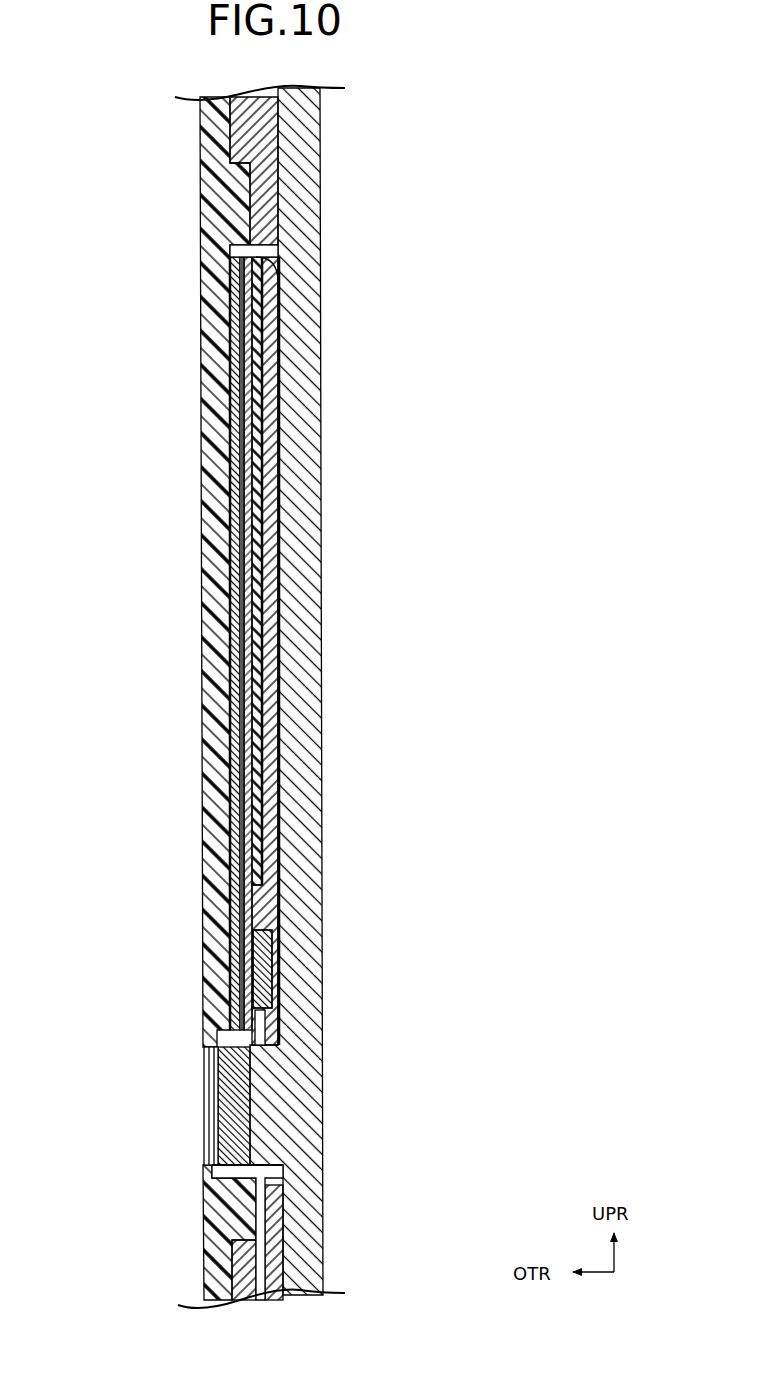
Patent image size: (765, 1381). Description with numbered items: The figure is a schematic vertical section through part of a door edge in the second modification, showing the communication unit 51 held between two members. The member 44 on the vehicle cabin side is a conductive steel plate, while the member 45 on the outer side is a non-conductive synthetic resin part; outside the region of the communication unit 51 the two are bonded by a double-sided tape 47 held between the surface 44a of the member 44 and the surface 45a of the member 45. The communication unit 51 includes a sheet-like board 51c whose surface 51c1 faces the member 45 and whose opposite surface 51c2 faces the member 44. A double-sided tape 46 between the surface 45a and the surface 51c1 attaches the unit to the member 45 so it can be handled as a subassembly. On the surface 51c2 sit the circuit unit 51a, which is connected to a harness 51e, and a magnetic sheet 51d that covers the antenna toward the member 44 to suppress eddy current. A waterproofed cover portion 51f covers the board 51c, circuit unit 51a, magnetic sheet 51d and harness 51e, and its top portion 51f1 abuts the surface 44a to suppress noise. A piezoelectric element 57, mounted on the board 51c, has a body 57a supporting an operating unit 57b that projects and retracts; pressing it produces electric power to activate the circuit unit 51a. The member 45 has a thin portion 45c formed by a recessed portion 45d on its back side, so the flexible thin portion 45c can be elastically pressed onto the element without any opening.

The member 44 is at (323, 158).
The member 45 is at (201, 213).
The double-sided tape 47 is at (234, 142).
The double-sided tape 46 is at (231, 440).
The communication unit 51 is at (270, 256).
The circuit unit 51a is at (273, 968).
The board 51c is at (241, 293).
The surface 51c1 is at (245, 350).
The surface 51c2 is at (252, 376).
The magnetic sheet 51d is at (266, 318).
The harness 51e is at (262, 1262).
The cover portion 51f is at (282, 445).
The top portion 51f1 is at (281, 590).
The surface 44a is at (278, 636).
The surface 45a is at (264, 500).
The thin portion 45c is at (206, 1077).
The recessed portion 45d is at (252, 1172).
The piezoelectric element 57 is at (208, 1166).
The body 57a is at (206, 1130).
The operating unit 57b is at (206, 1105).